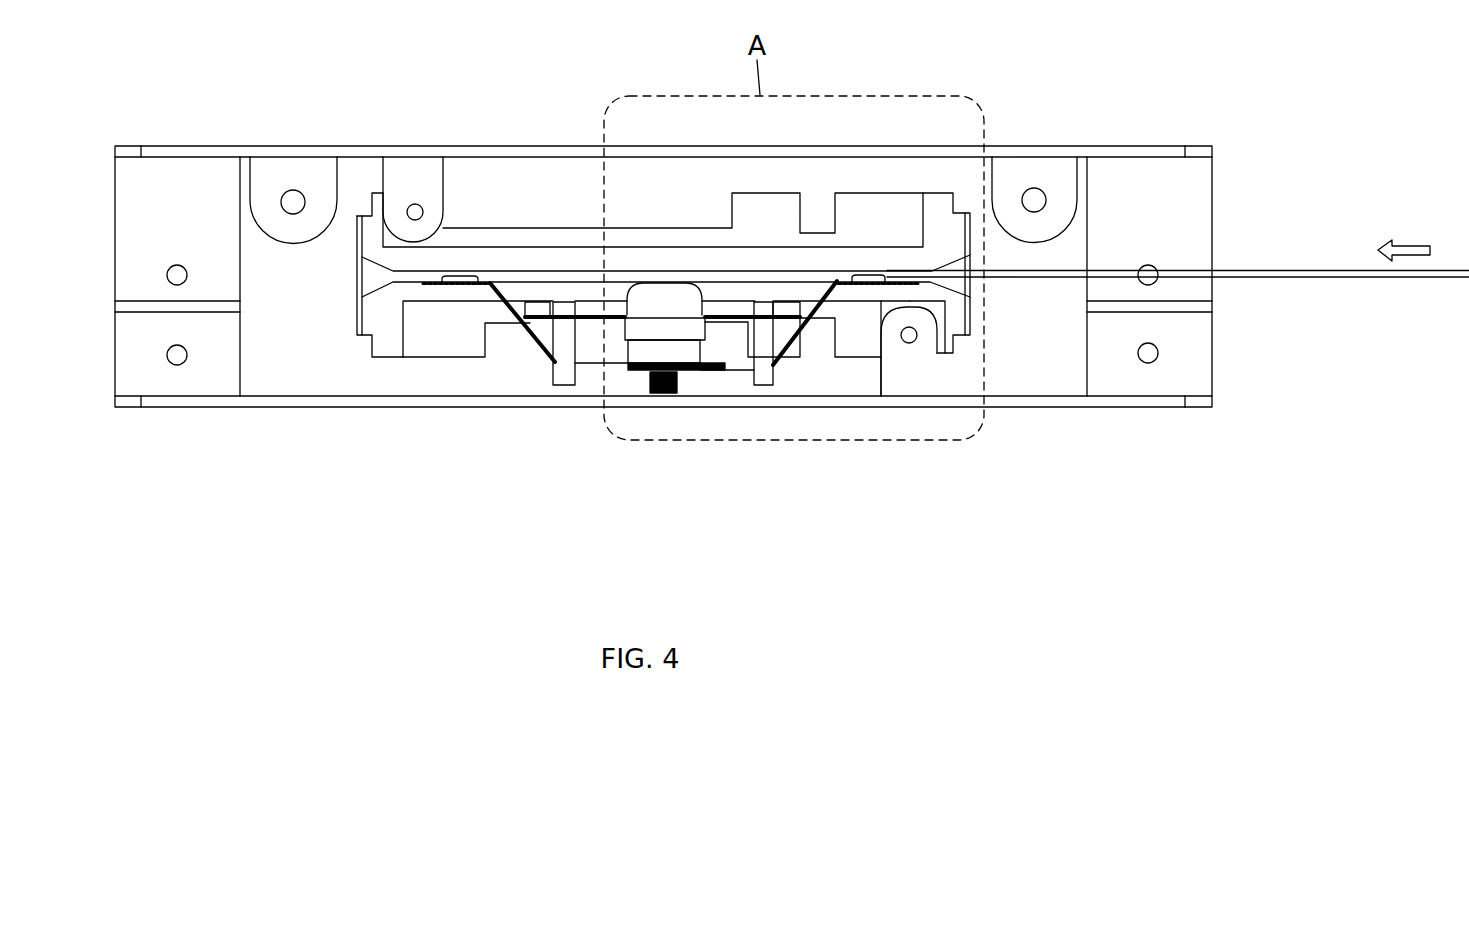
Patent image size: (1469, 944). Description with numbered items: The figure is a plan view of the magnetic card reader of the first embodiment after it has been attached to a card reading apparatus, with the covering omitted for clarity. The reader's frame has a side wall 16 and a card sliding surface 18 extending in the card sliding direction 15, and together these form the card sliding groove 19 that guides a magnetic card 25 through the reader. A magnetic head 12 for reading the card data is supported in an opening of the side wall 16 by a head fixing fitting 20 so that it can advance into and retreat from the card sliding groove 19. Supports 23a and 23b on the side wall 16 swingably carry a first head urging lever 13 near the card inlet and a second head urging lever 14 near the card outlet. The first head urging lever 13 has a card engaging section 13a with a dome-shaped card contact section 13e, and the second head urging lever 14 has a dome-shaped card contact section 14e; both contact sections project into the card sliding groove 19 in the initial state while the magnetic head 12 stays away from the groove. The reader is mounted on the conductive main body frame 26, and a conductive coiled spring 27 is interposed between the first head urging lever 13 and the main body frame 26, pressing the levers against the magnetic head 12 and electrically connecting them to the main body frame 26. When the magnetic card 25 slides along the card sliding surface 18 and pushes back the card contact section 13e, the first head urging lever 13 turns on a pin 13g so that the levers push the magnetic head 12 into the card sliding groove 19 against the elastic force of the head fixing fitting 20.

The magnetic head 12 is at (643, 352).
The first head urging lever 13 is at (748, 371).
The card engaging section 13a is at (868, 287).
The card contact section 13e is at (858, 275).
The pin 13g is at (763, 360).
The second head urging lever 14 is at (598, 375).
The card contact section 14e is at (458, 276).
The card sliding direction 15 is at (1410, 243).
The side wall 16 is at (445, 294).
The card sliding surface 18 is at (371, 276).
The card sliding groove 19 is at (527, 271).
The head fixing fitting 20 is at (618, 283).
The support 23a is at (767, 386).
The support 23b is at (563, 387).
The magnetic card 25 is at (1320, 270).
The main body frame 26 is at (949, 398).
The coiled spring 27 is at (692, 374).